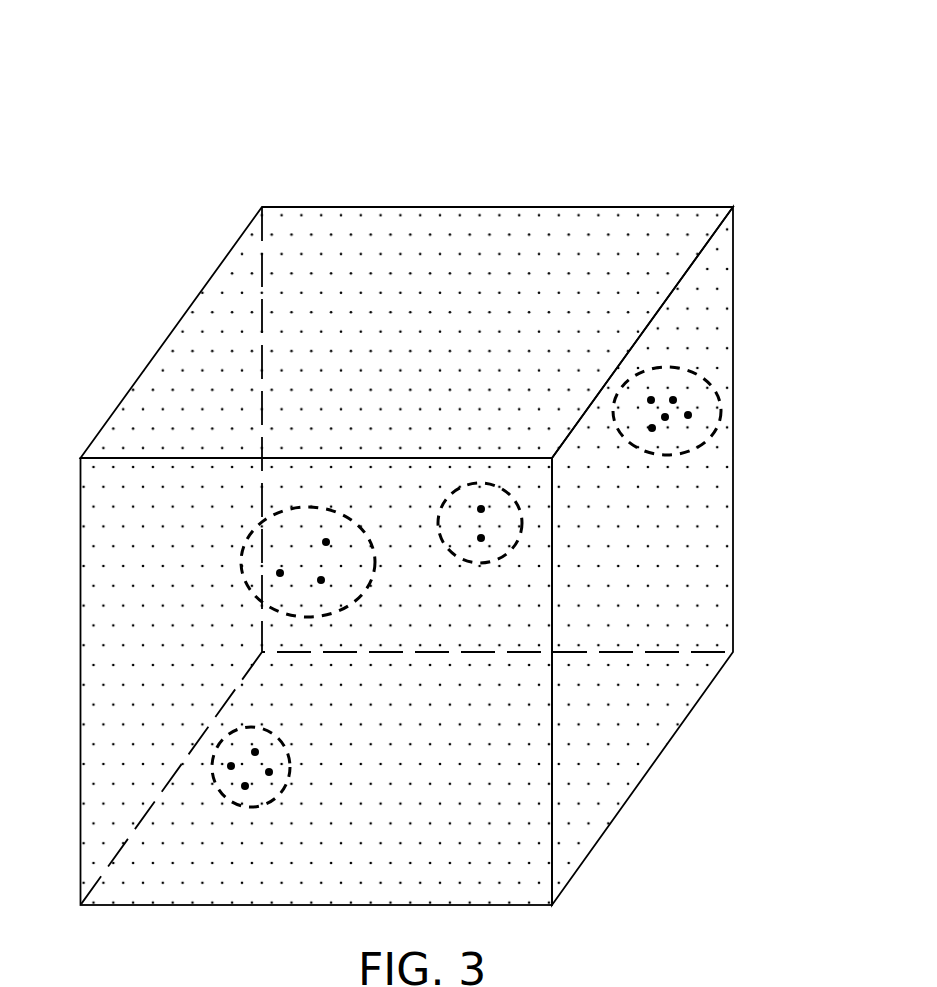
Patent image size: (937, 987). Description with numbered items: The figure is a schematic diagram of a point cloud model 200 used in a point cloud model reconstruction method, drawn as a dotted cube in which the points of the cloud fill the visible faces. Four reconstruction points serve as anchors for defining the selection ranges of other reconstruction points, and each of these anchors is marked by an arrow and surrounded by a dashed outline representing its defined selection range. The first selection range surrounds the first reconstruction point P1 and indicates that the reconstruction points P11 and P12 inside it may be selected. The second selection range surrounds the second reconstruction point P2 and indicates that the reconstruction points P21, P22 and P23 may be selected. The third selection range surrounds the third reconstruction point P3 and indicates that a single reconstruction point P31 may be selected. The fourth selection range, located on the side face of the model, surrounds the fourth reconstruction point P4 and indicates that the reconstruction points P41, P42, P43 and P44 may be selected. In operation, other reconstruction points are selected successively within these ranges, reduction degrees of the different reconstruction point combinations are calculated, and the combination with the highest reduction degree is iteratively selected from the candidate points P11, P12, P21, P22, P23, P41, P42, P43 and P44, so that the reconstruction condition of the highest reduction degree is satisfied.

The point cloud model 200 is at (138, 116).
The first reconstruction point P1 is at (260, 546).
The reconstruction point P11 is at (326, 538).
The reconstruction point P12 is at (321, 580).
The second reconstruction point P2 is at (236, 727).
The reconstruction point P21 is at (269, 772).
The reconstruction point P22 is at (245, 786).
The reconstruction point P23 is at (231, 766).
The third reconstruction point P3 is at (484, 472).
The reconstruction point P31 is at (481, 540).
The fourth reconstruction point P4 is at (687, 367).
The reconstruction point P41 is at (651, 400).
The reconstruction point P42 is at (688, 415).
The reconstruction point P43 is at (665, 417).
The reconstruction point P44 is at (652, 428).